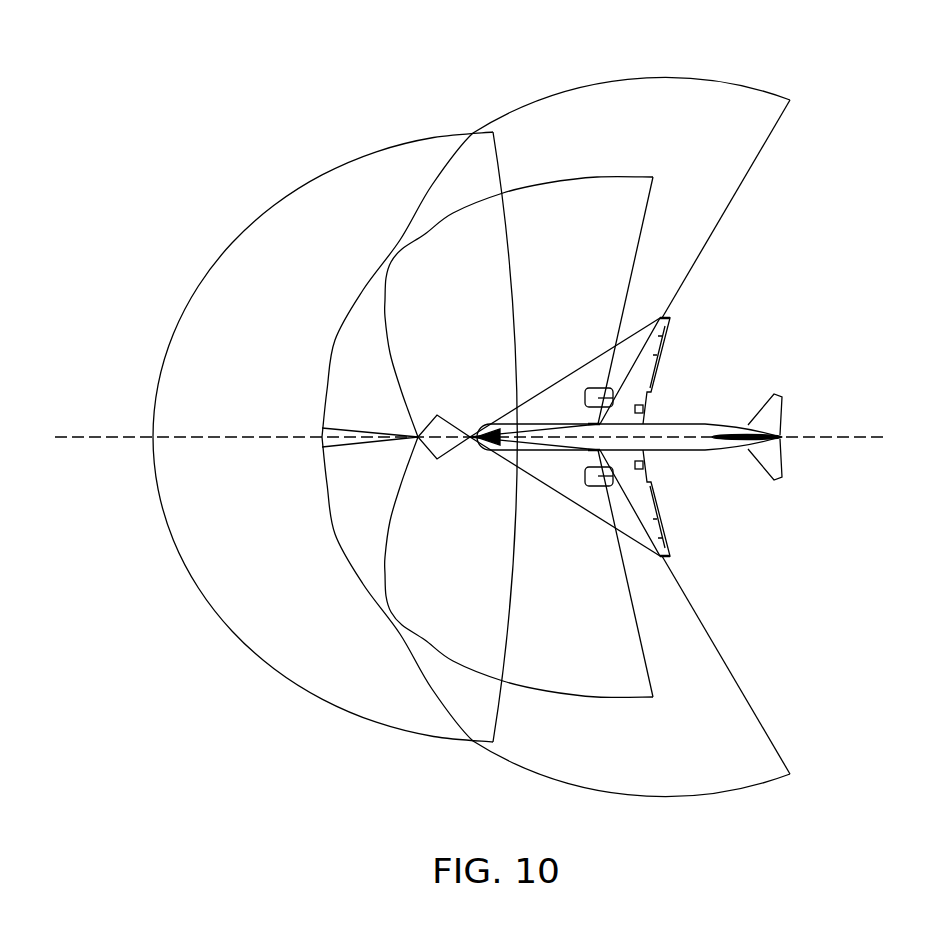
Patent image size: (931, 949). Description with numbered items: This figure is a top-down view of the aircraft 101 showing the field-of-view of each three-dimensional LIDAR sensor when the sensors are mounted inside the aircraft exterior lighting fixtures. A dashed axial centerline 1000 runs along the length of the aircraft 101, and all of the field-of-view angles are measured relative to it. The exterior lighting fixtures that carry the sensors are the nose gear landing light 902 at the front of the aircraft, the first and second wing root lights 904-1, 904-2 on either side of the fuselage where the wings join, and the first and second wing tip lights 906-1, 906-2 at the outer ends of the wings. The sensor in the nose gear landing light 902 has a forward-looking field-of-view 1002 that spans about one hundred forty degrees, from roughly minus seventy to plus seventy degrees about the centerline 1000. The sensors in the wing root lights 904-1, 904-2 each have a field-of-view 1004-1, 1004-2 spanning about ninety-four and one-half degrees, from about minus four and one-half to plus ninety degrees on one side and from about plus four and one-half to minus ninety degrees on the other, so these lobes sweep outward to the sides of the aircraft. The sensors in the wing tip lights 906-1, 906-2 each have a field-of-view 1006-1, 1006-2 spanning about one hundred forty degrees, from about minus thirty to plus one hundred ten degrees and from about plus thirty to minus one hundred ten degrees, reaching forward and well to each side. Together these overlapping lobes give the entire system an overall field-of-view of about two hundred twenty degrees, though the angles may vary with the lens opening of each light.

The aircraft 101 is at (800, 345).
The nose gear landing light 902 is at (474, 443).
The first wing root light 904-1 is at (590, 424).
The second wing root light 904-2 is at (590, 450).
The first wing tip light 906-1 is at (671, 317).
The second wing tip light 906-2 is at (671, 557).
The axial centerline 1000 is at (96, 437).
The field-of-view 1002 is at (210, 264).
The field-of-view 1004-1 is at (453, 213).
The field-of-view 1004-2 is at (453, 661).
The field-of-view 1006-1 is at (667, 79).
The field-of-view 1006-2 is at (736, 793).